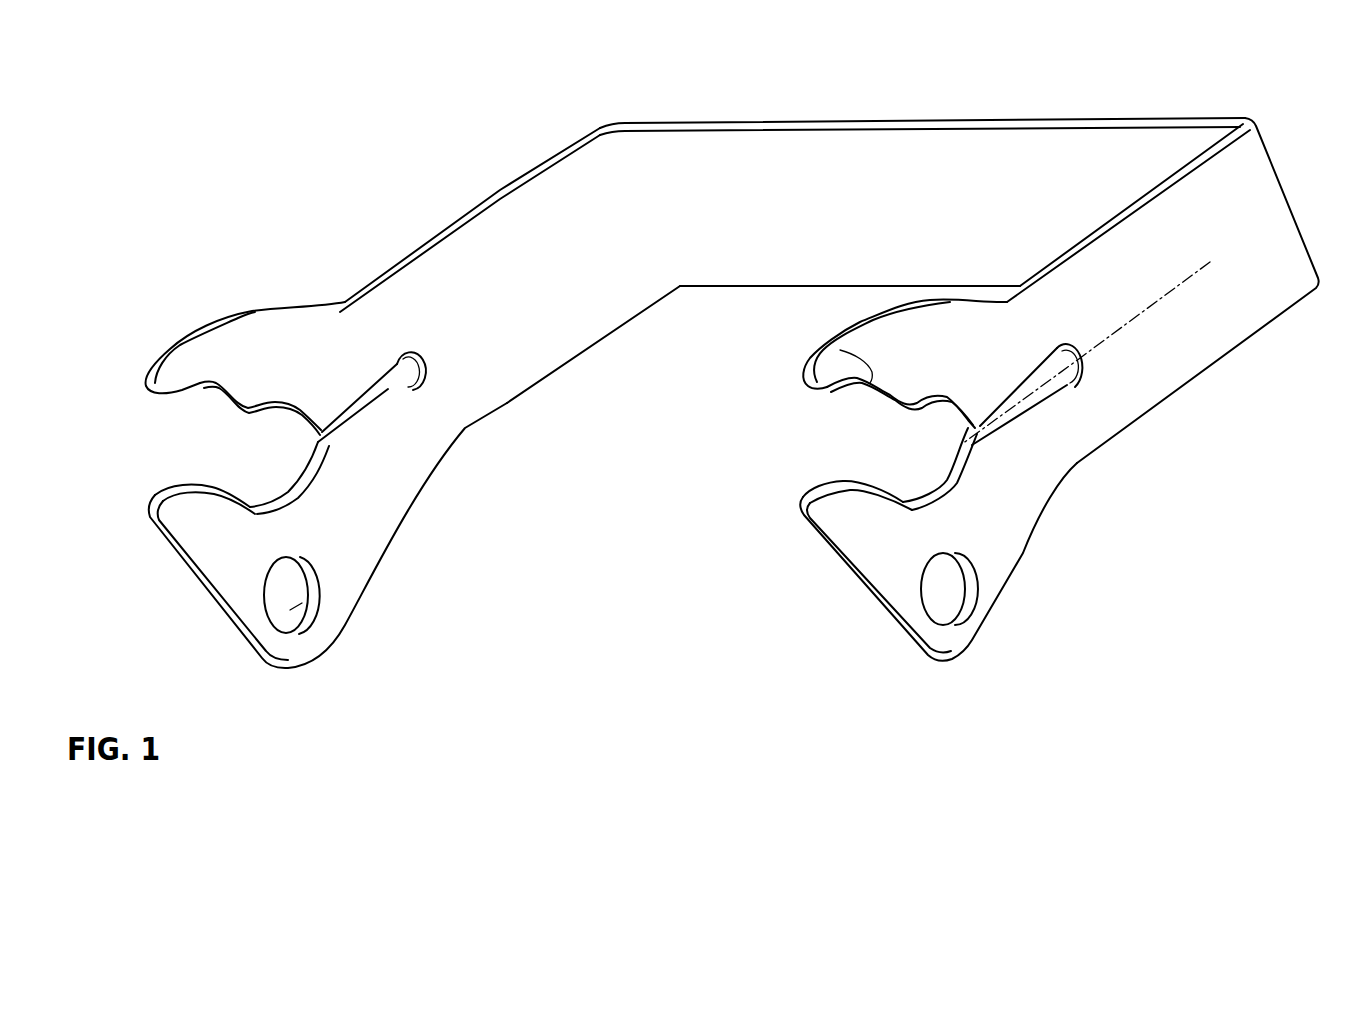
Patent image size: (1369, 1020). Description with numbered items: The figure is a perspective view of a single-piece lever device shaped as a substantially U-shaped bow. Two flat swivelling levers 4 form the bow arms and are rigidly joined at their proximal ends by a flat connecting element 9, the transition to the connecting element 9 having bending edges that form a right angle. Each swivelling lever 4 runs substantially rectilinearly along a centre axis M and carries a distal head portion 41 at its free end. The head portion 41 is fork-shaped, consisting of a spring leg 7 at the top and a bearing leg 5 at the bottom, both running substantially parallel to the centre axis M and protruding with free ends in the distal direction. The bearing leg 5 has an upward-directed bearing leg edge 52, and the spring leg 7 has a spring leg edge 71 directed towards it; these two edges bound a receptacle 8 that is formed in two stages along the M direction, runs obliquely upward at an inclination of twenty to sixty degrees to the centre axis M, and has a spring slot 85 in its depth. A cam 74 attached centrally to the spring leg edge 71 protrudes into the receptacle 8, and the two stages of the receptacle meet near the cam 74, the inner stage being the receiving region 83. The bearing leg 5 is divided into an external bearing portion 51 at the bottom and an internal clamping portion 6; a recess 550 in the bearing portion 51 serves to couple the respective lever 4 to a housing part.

The swivelling lever 4 is at (527, 316).
The connecting element 9 is at (977, 173).
The centre axis M is at (1153, 300).
The spring leg edge 71 is at (225, 408).
The cam 74 is at (318, 412).
The spring slot 85 is at (355, 407).
The bearing leg edge 52 is at (258, 462).
The receptacle 8 is at (228, 448).
The recess 550 is at (258, 462).
The distal head portion 41 is at (613, 563).
The spring leg 7 is at (872, 384).
The receiving region 83 is at (943, 433).
The bearing leg 5 is at (702, 643).
The internal clamping portion 6 is at (863, 536).
The external bearing portion 51 is at (946, 638).